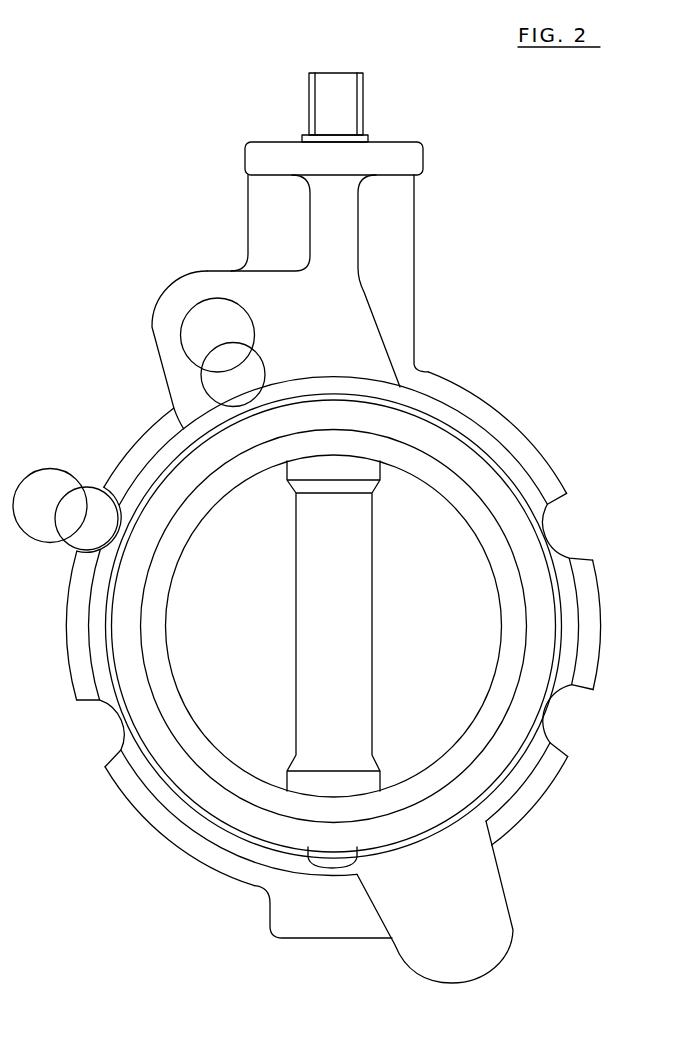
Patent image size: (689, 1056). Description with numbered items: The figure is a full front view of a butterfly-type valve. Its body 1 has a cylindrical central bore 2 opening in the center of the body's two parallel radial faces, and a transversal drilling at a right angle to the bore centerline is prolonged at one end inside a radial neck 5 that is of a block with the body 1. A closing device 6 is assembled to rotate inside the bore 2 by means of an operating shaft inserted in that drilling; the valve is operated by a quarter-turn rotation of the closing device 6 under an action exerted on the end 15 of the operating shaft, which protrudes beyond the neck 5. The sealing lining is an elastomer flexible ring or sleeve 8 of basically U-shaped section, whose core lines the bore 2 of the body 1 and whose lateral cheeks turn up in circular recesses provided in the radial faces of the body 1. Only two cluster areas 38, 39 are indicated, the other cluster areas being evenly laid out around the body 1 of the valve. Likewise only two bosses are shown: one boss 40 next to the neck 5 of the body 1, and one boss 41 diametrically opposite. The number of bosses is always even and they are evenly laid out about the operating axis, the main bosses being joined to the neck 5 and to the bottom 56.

The body 1 is at (100, 779).
The cylindrical central bore 2 is at (522, 588).
The radial neck 5 is at (397, 246).
The closing device 6 is at (350, 622).
The elastomer flexible ring or sleeve 8 is at (490, 530).
The end of the operating shaft 15 is at (325, 100).
The cluster area 38 is at (187, 298).
The cluster area 39 is at (58, 462).
The boss 40 is at (163, 342).
The boss 41 is at (473, 915).
The bottom 56 is at (290, 912).